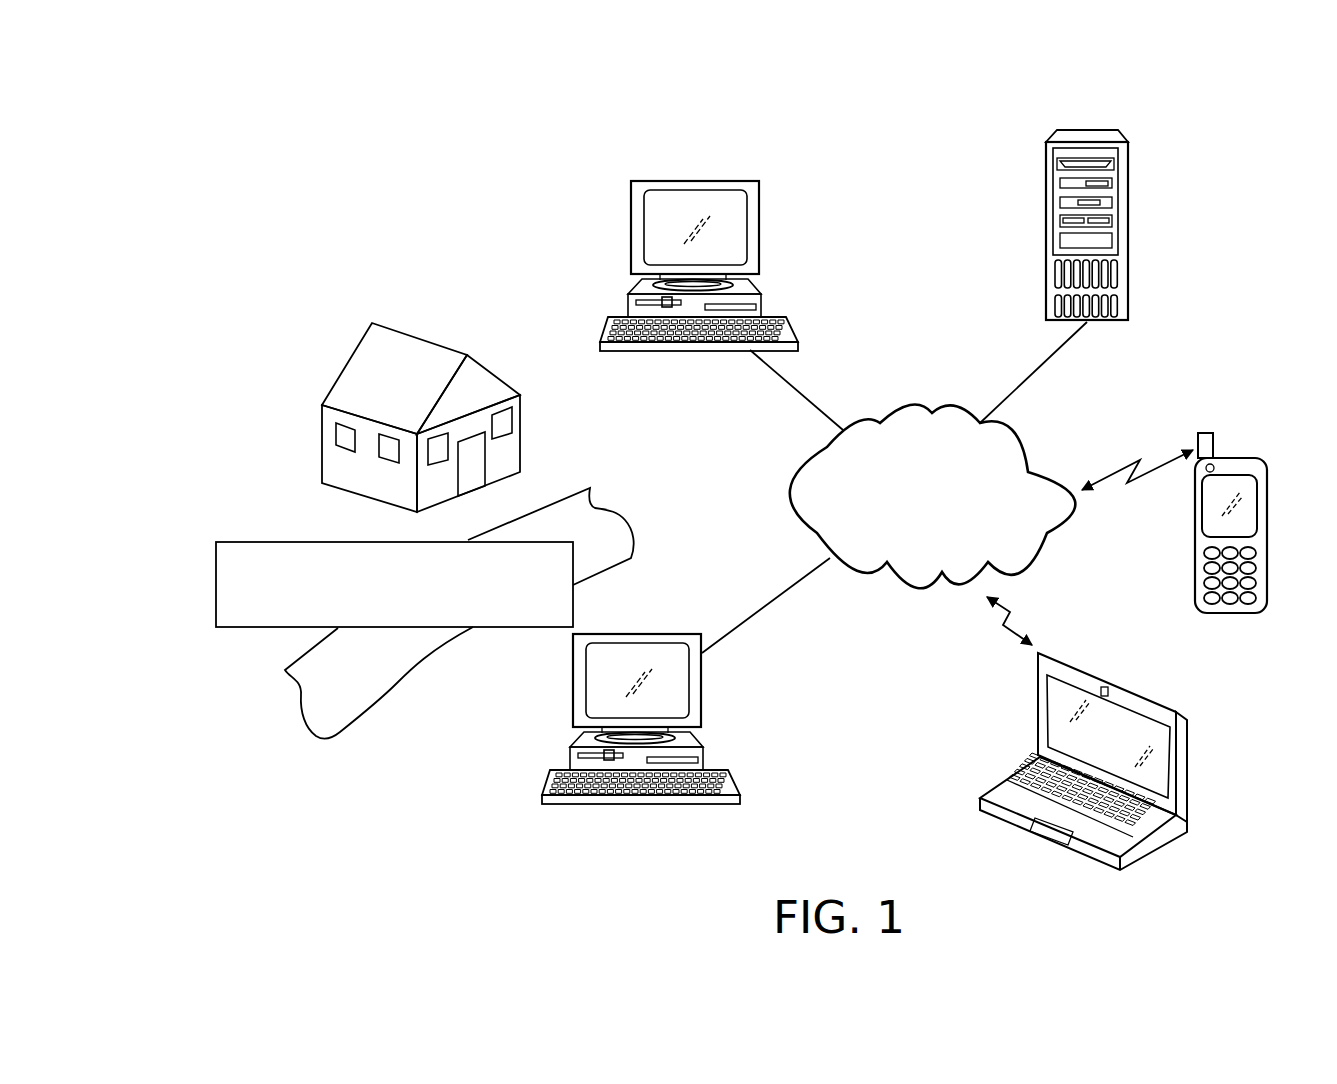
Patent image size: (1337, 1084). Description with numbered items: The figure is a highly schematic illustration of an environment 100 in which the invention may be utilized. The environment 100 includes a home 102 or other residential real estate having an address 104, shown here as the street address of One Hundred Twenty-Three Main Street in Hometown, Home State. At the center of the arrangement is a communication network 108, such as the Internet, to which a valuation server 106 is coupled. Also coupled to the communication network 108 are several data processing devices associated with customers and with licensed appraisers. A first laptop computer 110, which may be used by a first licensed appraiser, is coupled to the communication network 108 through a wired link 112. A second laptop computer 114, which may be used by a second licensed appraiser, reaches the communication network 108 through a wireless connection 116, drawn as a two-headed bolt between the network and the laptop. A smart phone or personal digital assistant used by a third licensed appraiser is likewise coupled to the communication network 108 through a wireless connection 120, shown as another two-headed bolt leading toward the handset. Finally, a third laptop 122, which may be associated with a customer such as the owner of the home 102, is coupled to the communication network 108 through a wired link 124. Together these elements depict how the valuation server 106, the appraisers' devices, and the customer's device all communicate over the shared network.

The environment 100 is at (928, 110).
The home 102 is at (408, 334).
The address 104 is at (276, 541).
The valuation server 106 is at (1130, 178).
The communication network 108 is at (937, 557).
The first laptop computer 110 is at (702, 700).
The wired link 112 is at (767, 603).
The second laptop computer 114 is at (1187, 764).
The wireless connection 116 is at (1003, 623).
The wireless connection 120 is at (1124, 465).
The third laptop 122 is at (758, 222).
The wired link 124 is at (813, 395).